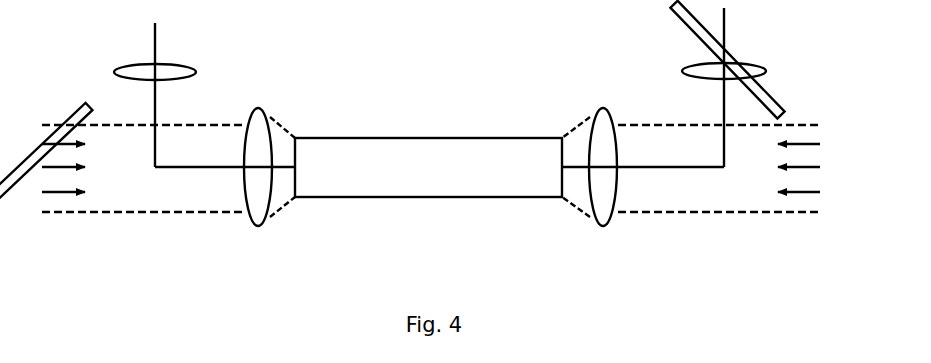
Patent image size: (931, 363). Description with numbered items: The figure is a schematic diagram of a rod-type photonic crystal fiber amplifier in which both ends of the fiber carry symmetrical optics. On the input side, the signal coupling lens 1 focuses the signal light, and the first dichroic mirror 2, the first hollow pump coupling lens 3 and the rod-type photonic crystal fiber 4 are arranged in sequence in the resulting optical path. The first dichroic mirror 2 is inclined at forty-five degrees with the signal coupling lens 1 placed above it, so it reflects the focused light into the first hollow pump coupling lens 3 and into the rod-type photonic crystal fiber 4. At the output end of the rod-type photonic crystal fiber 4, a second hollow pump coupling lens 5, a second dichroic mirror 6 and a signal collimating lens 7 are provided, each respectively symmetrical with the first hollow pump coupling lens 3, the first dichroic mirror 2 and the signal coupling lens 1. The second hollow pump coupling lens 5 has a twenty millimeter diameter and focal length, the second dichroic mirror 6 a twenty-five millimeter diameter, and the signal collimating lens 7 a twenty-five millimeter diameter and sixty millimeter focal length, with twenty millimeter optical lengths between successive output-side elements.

The signal coupling lens 1 is at (131, 62).
The first dichroic mirror 2 is at (167, 193).
The first hollow pump coupling lens 3 is at (243, 200).
The rod-type photonic crystal fiber 4 is at (437, 197).
The second hollow pump coupling lens 5 is at (588, 200).
The second dichroic mirror 6 is at (725, 190).
The signal collimating lens 7 is at (744, 61).